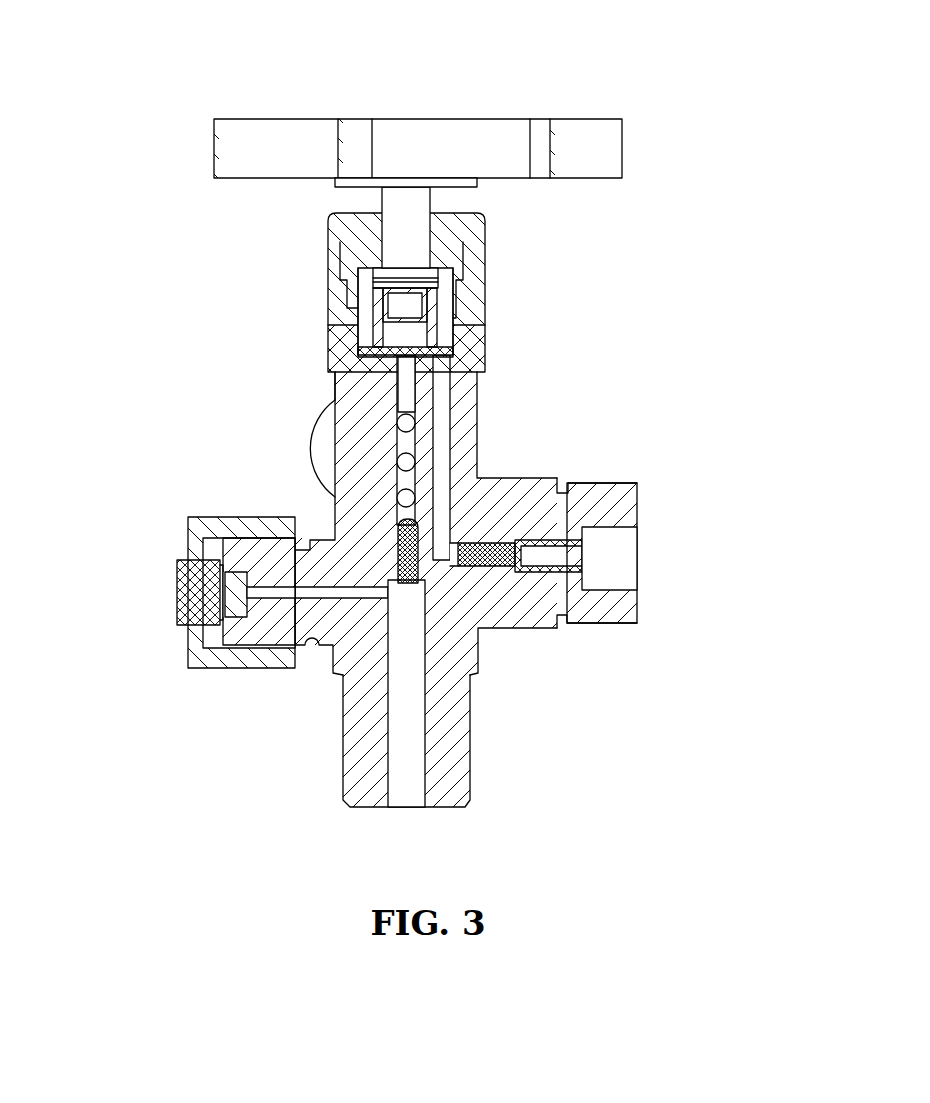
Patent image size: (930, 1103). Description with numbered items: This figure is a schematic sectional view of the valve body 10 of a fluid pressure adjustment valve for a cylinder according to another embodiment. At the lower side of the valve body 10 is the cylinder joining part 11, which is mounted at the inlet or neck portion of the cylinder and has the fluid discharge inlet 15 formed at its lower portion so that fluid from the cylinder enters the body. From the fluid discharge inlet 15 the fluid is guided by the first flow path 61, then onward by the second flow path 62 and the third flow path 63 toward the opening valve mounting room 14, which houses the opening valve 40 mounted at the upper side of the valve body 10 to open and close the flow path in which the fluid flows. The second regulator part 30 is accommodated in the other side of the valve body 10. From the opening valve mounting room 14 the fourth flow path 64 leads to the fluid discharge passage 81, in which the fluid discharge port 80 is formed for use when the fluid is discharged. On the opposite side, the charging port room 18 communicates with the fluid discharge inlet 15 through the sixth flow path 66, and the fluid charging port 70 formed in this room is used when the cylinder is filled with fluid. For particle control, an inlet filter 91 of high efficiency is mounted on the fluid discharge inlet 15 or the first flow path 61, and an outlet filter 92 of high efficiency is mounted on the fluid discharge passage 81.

The valve body 10 is at (335, 490).
The cylinder joining part 11 is at (343, 737).
The opening valve mounting room 14 is at (401, 395).
The fluid discharge inlet 15 is at (412, 747).
The charging port room 18 is at (242, 627).
The second regulator part 30 is at (333, 400).
The opening valve 40 is at (656, 109).
The first flow path 61 is at (417, 517).
The second flow path 62 is at (313, 435).
The third flow path 63 is at (400, 455).
The fourth flow path 64 is at (442, 453).
The sixth flow path 66 is at (330, 598).
The fluid charging port 70 is at (169, 588).
The fluid discharge port 80 is at (682, 548).
The fluid discharge passage 81 is at (622, 562).
The inlet filter 91 is at (433, 553).
The outlet filter 92 is at (553, 493).